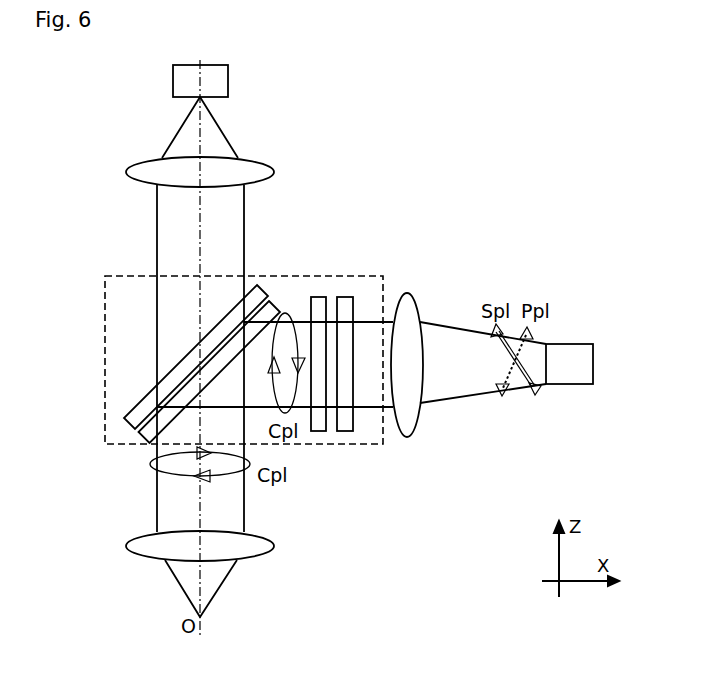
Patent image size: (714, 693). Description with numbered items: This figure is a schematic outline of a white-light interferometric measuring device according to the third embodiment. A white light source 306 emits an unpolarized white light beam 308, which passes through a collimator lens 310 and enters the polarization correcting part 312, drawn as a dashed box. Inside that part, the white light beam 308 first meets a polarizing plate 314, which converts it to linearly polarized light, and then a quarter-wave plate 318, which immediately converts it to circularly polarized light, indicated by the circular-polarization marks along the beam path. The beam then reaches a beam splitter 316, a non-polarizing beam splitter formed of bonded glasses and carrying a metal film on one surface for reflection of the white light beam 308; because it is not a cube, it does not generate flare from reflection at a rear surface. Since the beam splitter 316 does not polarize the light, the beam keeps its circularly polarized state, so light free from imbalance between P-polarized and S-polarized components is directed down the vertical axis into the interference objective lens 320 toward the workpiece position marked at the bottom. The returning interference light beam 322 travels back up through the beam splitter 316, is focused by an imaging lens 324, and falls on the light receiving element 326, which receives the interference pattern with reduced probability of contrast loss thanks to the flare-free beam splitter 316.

The white light source 306 is at (570, 348).
The white light beam 308 is at (460, 402).
The collimator lens 310 is at (403, 298).
The polarization correcting part 312 is at (317, 283).
The polarizing plate 314 is at (347, 418).
The beam splitter 316 is at (168, 392).
The quarter-wave plate 318 is at (320, 423).
The interference objective lens 320 is at (272, 546).
The interference light beam 322 is at (244, 221).
The imaging lens 324 is at (265, 176).
The light receiving element 326 is at (228, 84).